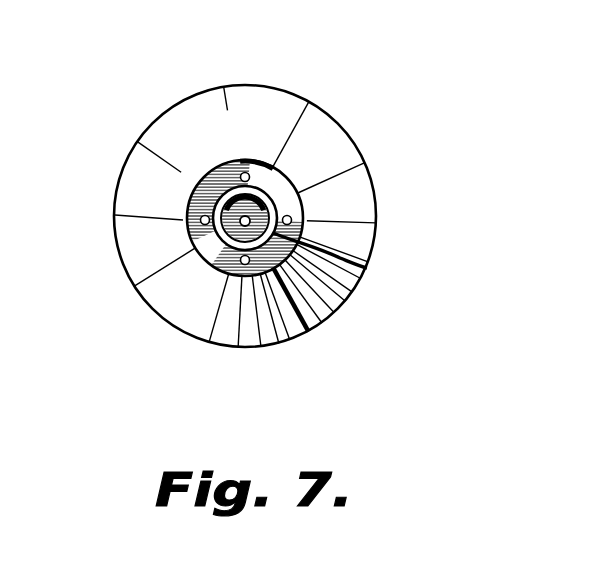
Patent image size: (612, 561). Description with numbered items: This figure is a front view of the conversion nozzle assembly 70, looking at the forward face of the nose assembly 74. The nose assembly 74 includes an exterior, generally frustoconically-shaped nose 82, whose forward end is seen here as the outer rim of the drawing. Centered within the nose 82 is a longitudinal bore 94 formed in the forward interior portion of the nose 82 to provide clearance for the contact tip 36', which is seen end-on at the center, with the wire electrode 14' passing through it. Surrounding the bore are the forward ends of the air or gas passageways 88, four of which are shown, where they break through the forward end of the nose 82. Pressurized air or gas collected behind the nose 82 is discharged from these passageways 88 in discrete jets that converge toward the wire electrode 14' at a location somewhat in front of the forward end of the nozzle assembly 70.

The nose 82 is at (188, 98).
The forward nose assembly 74 is at (322, 90).
The nozzle assembly 70 is at (438, 168).
The longitudinal bore 94 is at (218, 197).
The air or gas passageways 88 is at (202, 222).
The wire electrode 14' is at (188, 314).
The contact tip 36' is at (359, 263).